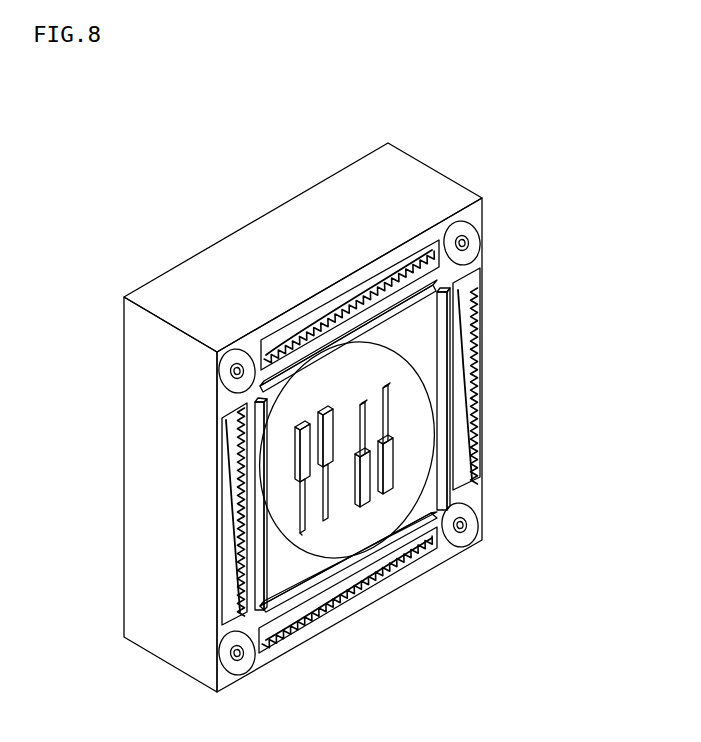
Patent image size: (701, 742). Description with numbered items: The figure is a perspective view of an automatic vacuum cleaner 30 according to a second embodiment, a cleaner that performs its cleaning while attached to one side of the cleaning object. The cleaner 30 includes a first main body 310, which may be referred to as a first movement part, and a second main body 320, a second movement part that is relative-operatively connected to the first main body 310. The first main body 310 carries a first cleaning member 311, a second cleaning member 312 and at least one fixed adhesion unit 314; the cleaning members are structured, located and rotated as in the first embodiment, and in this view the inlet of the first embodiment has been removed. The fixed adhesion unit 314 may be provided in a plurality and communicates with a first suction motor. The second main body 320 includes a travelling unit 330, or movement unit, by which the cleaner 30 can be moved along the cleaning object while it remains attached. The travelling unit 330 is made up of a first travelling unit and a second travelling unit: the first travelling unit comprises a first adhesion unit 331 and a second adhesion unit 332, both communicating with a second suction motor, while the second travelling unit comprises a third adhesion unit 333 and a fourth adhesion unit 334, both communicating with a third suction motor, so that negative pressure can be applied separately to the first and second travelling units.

The automatic vacuum cleaner 30 is at (470, 149).
The first main body 310 is at (263, 237).
The first cleaning member 311 is at (345, 302).
The second cleaning member 312 is at (423, 298).
The fixed adhesion unit 314 is at (474, 236).
The second main body 320 is at (413, 403).
The travelling unit 330 is at (339, 538).
The first adhesion unit 331 is at (296, 470).
The second adhesion unit 332 is at (296, 436).
The third adhesion unit 333 is at (362, 505).
The fourth adhesion unit 334 is at (393, 474).